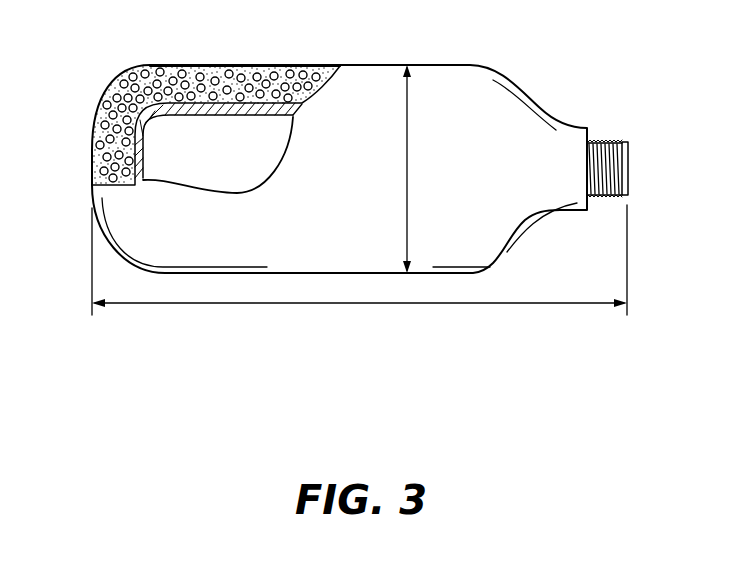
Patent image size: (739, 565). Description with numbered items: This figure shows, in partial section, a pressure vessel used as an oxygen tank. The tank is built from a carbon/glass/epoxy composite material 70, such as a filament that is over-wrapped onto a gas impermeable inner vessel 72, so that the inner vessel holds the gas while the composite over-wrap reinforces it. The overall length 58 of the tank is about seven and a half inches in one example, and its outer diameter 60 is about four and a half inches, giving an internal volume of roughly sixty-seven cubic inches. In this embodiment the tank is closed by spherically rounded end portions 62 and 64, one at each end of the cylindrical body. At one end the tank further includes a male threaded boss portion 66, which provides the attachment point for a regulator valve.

The overall length 58 is at (366, 305).
The outer diameter 60 is at (407, 160).
The spherically rounded end portion 62 is at (100, 125).
The spherically rounded end portion 64 is at (520, 90).
The male threaded boss portion 66 is at (628, 165).
The carbon/glass/epoxy composite material 70 is at (210, 64).
The gas impermeable inner vessel 72 is at (143, 152).